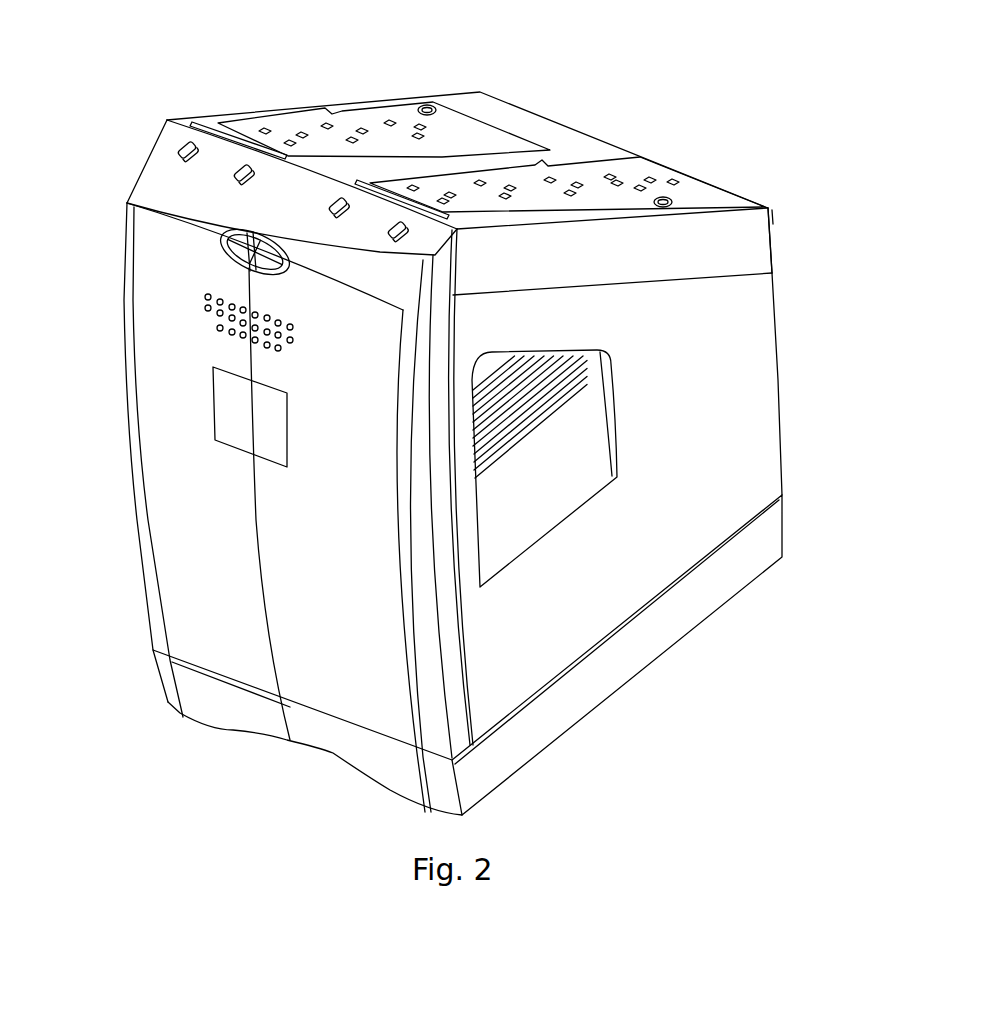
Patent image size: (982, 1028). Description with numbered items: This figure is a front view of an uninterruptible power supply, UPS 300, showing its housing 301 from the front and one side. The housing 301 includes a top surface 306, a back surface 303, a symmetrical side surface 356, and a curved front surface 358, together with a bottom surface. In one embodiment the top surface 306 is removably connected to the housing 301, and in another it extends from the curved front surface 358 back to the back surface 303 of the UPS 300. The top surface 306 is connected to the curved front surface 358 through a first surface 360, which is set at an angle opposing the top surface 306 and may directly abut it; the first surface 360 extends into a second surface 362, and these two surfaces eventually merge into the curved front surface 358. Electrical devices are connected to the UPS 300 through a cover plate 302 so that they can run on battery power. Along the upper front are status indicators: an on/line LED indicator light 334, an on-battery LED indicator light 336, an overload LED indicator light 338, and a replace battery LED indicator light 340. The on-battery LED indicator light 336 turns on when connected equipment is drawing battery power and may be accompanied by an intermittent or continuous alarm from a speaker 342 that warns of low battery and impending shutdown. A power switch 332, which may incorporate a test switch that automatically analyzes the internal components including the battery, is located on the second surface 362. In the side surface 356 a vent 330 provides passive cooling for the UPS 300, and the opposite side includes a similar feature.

The UPS 300 is at (648, 73).
The housing 301 is at (617, 147).
The cover plate 302 is at (765, 164).
The back surface 303 is at (772, 222).
The top surface 306 is at (497, 103).
The vent 330 is at (542, 530).
The power switch 332 is at (293, 263).
The on/line LED indicator light 334 is at (178, 150).
The on-battery LED indicator light 336 is at (233, 177).
The overload LED indicator light 338 is at (328, 212).
The replace battery LED indicator light 340 is at (386, 234).
The speaker 342 is at (297, 330).
The symmetrical side surface 356 is at (707, 543).
The curved front surface 358 is at (327, 710).
The first surface 360 is at (168, 121).
The second surface 362 is at (128, 185).